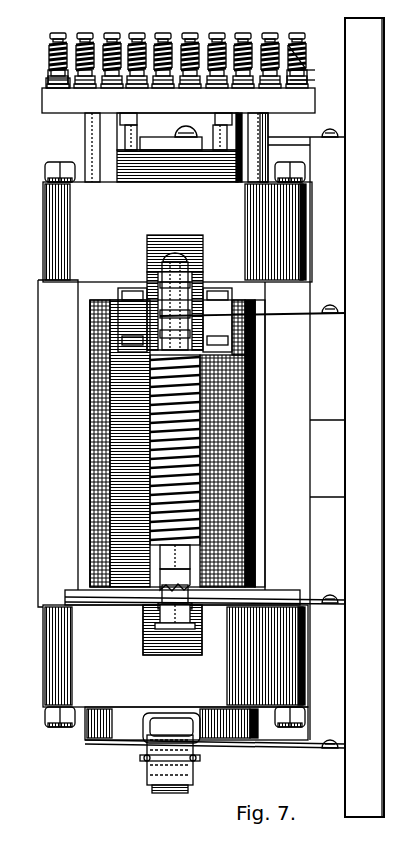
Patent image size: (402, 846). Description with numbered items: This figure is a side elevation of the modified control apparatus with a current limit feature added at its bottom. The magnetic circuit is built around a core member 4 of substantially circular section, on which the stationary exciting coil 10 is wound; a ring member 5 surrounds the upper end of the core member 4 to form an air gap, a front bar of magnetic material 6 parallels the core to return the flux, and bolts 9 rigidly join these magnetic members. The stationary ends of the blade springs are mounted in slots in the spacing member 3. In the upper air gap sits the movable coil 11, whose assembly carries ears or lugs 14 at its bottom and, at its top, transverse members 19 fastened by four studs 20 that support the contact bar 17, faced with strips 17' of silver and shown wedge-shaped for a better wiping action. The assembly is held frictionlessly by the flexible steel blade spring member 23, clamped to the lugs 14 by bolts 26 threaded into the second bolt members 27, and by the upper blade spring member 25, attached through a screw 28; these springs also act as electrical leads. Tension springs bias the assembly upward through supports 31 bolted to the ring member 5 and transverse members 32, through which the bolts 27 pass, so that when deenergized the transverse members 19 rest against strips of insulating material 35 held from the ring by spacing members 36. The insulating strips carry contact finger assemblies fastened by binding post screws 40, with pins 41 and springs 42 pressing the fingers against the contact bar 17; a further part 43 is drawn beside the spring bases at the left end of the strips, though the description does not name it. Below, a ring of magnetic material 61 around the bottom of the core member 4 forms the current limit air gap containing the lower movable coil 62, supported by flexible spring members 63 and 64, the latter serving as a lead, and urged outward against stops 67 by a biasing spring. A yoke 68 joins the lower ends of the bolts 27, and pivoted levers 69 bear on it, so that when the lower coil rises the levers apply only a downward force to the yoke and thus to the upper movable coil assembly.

The spacing member 3 is at (329, 418).
The core member 4 is at (250, 295).
The ring member 5 is at (52, 224).
The front bar of magnetic material 6 is at (163, 12).
The bolts 9 is at (60, 162).
The stationary field or exciting coil 10 is at (90, 416).
The movable coil 11 is at (158, 236).
The ears or lugs 14 is at (192, 268).
The contact bar 17 is at (316, 87).
The facing strips 17' is at (316, 69).
The transverse members 19 is at (131, 115).
The studs 20 is at (138, 131).
The flexible steel blade spring member 23 is at (283, 318).
The upper blade spring member 25 is at (320, 136).
The bolts 26 is at (160, 260).
The second bolt members 27 is at (90, 328).
The screw 28 is at (186, 122).
The supports 31 is at (175, 320).
The transverse members 32 is at (262, 355).
The strips of insulating material 35 is at (48, 100).
The spacing members 36 is at (88, 128).
The binding post screws 40 is at (50, 66).
The pins 41 is at (137, 38).
The springs 42 is at (304, 55).
The spring seat 43 is at (50, 78).
The ring of magnetic material 61 is at (52, 664).
The movable coil 62 is at (160, 645).
The flexible spring member 63 is at (255, 745).
The flexible spring member 64 is at (302, 600).
The stops 67 is at (150, 745).
The yoke 68 is at (160, 585).
The pivoted levers 69 is at (152, 782).